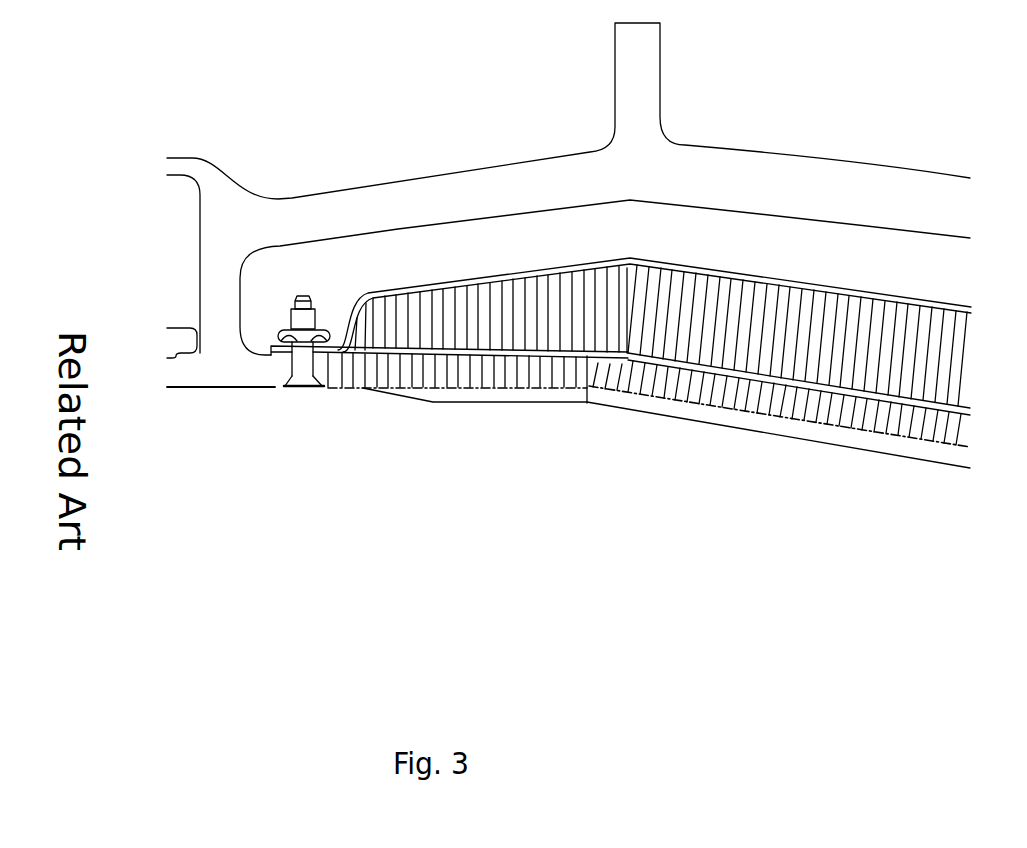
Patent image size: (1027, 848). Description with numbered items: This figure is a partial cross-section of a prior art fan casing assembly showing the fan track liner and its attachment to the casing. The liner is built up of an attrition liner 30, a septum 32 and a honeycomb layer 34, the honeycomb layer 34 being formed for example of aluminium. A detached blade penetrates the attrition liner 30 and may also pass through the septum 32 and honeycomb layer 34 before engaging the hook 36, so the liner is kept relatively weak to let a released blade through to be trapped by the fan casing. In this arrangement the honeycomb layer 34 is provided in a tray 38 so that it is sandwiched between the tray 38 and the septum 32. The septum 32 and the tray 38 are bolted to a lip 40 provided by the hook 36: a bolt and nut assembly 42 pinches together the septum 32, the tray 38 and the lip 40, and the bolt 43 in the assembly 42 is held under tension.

The attrition liner 30 is at (522, 419).
The septum 32 is at (497, 371).
The honeycomb layer 34 is at (471, 330).
The hook 36 is at (234, 286).
The tray 38 is at (464, 268).
The lip 40 is at (273, 377).
The bolt and nut assembly 42 is at (319, 291).
The bolt 43 is at (298, 385).